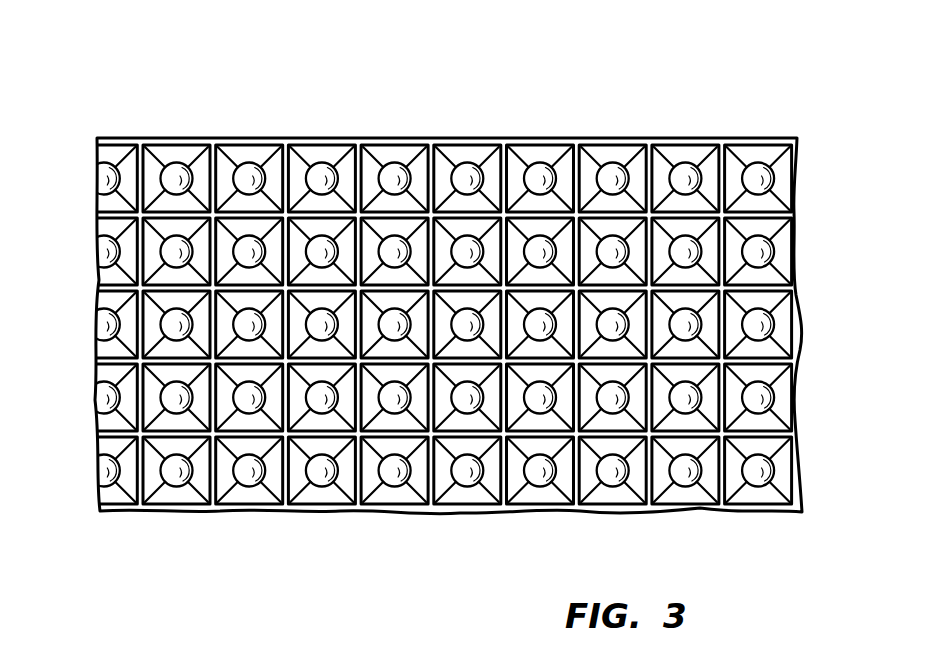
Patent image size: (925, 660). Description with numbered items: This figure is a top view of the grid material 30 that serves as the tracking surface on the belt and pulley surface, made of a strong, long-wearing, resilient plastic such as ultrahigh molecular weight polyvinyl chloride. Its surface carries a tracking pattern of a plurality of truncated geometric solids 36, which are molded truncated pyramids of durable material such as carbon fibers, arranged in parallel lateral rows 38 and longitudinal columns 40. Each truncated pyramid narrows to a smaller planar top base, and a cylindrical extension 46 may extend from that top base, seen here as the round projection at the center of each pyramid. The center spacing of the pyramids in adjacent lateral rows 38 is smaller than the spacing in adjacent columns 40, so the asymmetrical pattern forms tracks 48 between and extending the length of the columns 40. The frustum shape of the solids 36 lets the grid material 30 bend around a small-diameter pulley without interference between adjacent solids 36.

The grid material 30 is at (170, 96).
The truncated geometric solids 36 is at (692, 152).
The lateral rows 38 is at (330, 132).
The longitudinal columns 40 is at (84, 242).
The cylindrical extension 46 is at (617, 168).
The tracks 48 is at (97, 214).